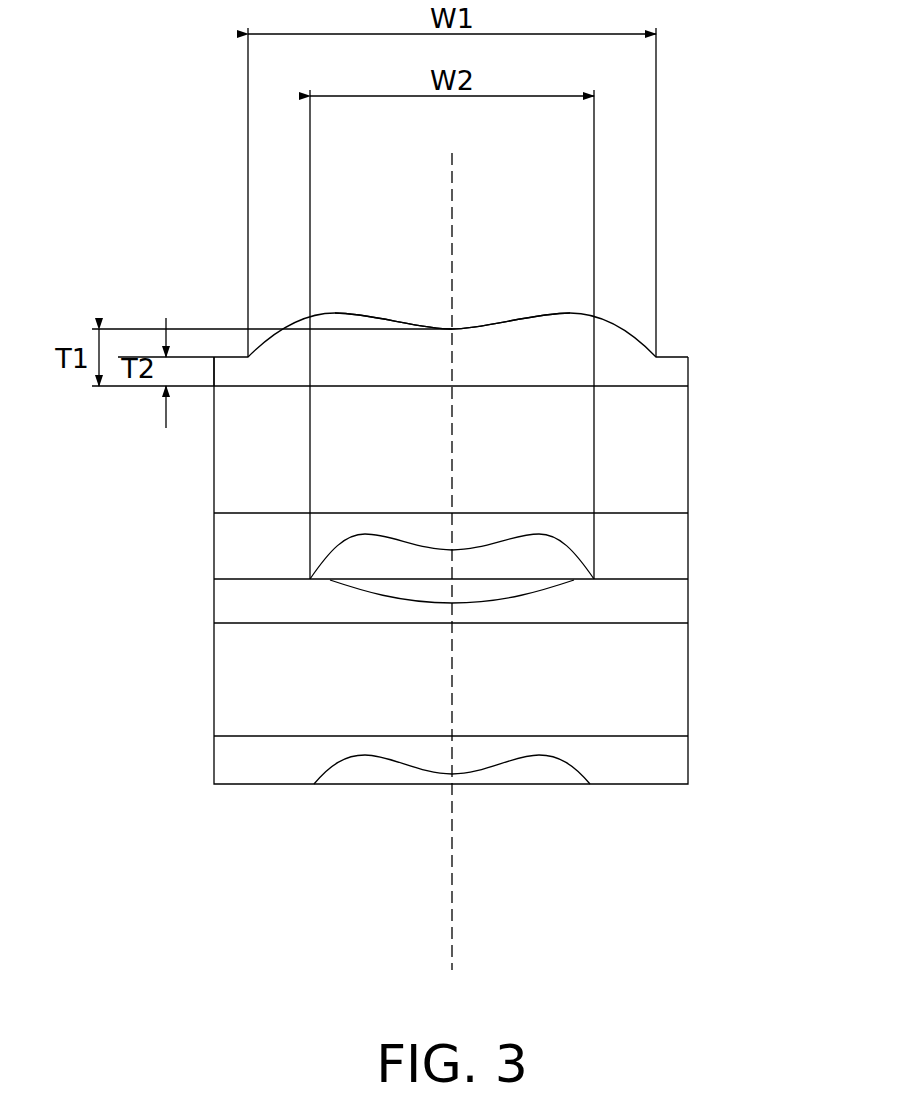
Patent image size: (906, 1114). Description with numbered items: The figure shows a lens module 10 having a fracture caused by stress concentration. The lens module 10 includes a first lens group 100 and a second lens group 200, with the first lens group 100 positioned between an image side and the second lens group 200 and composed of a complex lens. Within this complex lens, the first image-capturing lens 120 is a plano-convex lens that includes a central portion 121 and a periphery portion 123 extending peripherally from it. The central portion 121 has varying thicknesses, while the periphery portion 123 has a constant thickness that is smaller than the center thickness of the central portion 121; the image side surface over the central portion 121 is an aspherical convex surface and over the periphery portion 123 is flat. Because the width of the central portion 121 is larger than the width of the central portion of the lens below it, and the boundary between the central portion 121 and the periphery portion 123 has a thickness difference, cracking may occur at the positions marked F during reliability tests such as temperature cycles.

The lens module 10 is at (190, 218).
The first lens group 100 is at (689, 351).
The first image-capturing lens 120 is at (678, 375).
The central portion 121 is at (530, 337).
The periphery portion 123 is at (232, 372).
The second lens group 200 is at (690, 600).